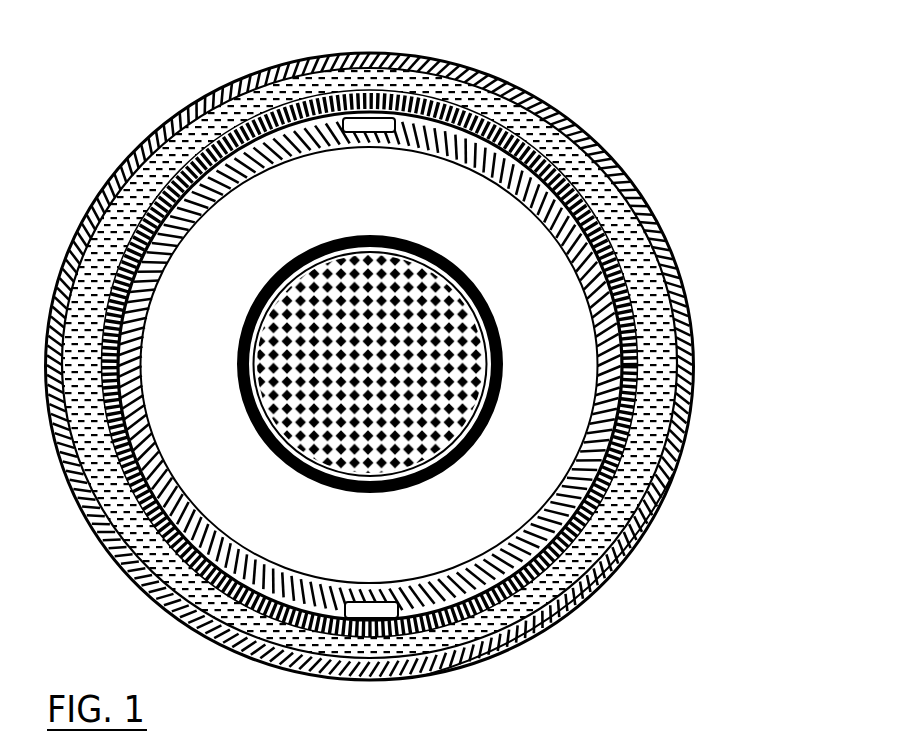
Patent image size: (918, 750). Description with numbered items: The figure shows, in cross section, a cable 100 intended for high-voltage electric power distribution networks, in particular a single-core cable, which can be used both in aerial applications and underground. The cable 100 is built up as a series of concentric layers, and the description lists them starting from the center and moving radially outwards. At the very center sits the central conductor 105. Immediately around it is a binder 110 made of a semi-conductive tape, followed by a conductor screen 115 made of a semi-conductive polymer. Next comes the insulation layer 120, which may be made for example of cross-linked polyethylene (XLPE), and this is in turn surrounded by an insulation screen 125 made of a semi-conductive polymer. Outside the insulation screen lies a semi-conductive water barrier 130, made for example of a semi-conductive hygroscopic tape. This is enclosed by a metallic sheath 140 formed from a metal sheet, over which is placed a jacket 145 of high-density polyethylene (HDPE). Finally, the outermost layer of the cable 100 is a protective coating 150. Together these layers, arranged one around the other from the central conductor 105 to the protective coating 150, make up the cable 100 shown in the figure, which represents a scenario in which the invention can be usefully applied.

The cable 100 is at (102, 97).
The central conductor 105 is at (372, 367).
The binder 110 is at (480, 283).
The conductor screen 115 is at (497, 313).
The insulation layer 120 is at (553, 333).
The insulation screen 125 is at (637, 343).
The semi-conductive water barrier 130 is at (697, 367).
The metallic sheath 140 is at (600, 480).
The jacket 145 is at (600, 550).
The protective coating 150 is at (557, 620).